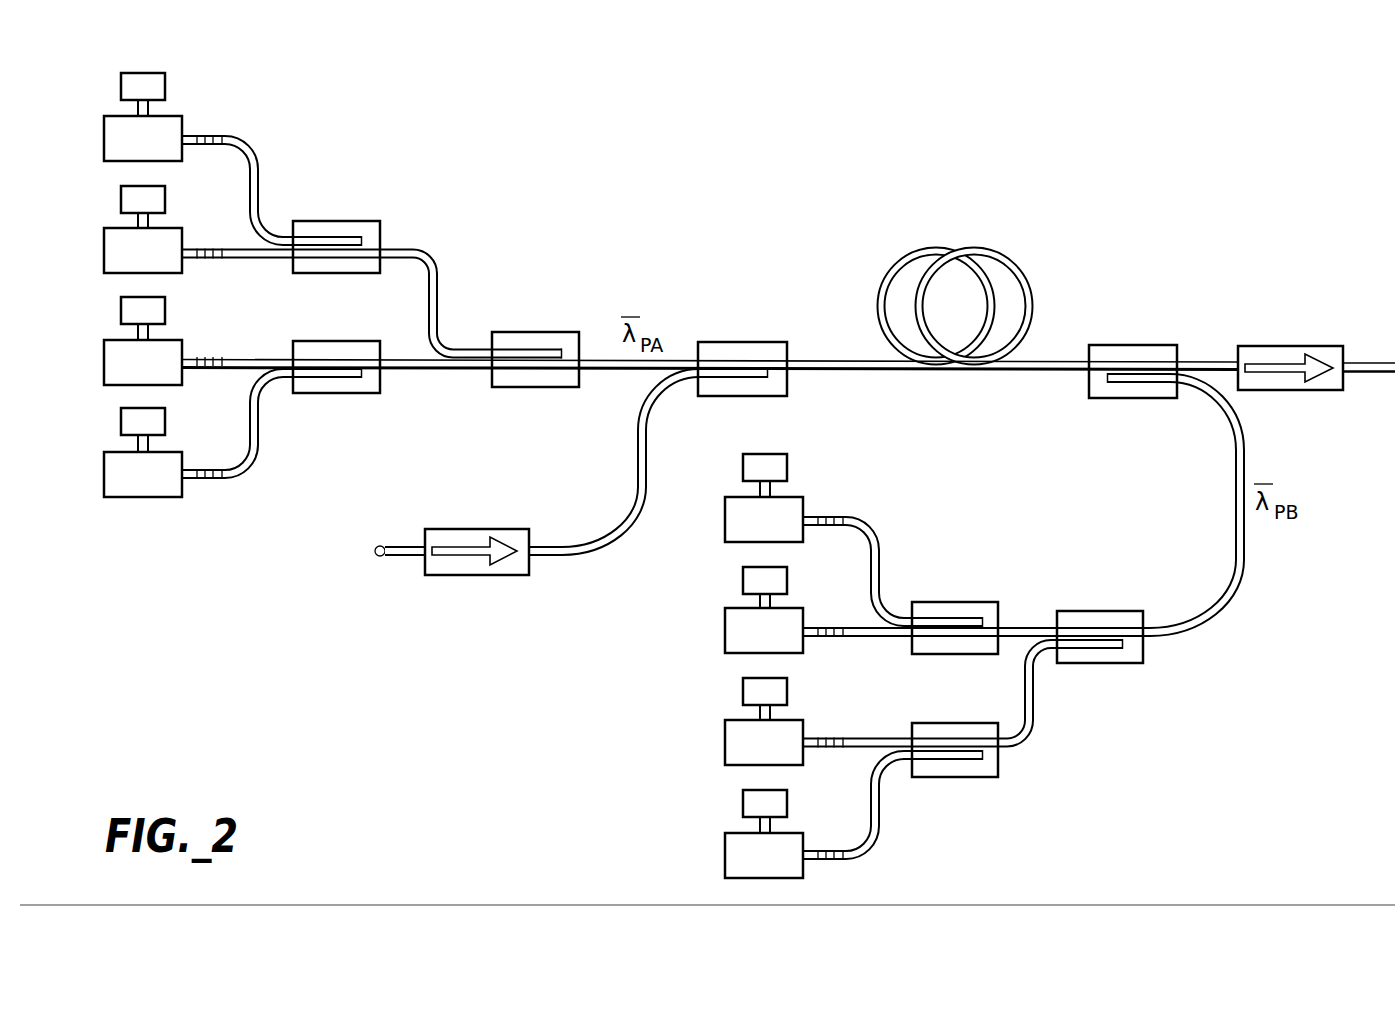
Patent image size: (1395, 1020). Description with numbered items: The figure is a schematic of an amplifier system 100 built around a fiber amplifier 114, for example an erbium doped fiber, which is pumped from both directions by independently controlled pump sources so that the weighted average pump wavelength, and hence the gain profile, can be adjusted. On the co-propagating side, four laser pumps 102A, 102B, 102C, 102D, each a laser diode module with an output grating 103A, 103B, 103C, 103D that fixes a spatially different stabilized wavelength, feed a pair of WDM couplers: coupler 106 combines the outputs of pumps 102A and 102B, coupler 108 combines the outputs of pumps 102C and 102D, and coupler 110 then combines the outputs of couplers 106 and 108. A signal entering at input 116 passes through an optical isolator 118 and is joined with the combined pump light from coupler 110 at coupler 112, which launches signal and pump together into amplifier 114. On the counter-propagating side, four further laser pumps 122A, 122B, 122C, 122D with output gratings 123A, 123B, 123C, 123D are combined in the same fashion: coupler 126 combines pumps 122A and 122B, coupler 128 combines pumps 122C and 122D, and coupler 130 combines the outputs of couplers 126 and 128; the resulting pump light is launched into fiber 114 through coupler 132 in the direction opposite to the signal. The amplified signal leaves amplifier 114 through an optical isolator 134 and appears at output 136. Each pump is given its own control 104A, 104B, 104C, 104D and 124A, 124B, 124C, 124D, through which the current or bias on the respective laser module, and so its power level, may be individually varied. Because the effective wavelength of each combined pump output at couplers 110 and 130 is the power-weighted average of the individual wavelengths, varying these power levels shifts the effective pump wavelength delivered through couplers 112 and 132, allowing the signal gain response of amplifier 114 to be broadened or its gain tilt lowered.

The amplifier system 100 is at (1117, 181).
The laser pump 102A is at (174, 116).
The laser pump 102B is at (173, 228).
The laser pump 102C is at (173, 340).
The laser pump 102D is at (173, 452).
The output grating 103A is at (254, 118).
The output grating 103B is at (220, 262).
The output grating 103C is at (218, 355).
The output grating 103D is at (208, 480).
The control 104A is at (151, 72).
The control 104B is at (121, 197).
The control 104C is at (121, 308).
The control 104D is at (121, 419).
The WDM coupler 106 is at (330, 221).
The WDM coupler 108 is at (330, 393).
The WDM coupler 110 is at (515, 332).
The coupler 112 is at (738, 342).
The fiber amplifier 114 is at (978, 250).
The input 116 is at (380, 545).
The optical isolator 118 is at (472, 529).
The laser pump 122A is at (795, 497).
The laser pump 122B is at (795, 608).
The laser pump 122C is at (795, 720).
The laser pump 122D is at (795, 833).
The output grating 123A is at (840, 514).
The output grating 123B is at (838, 643).
The output grating 123C is at (838, 735).
The output grating 123D is at (828, 860).
The control 124A is at (771, 453).
The control 124B is at (743, 577).
The control 124C is at (743, 689).
The control 124D is at (743, 800).
The WDM coupler 126 is at (950, 602).
The WDM coupler 128 is at (948, 777).
The WDM coupler 130 is at (1128, 611).
The coupler 132 is at (1118, 345).
The optical isolator 134 is at (1262, 346).
The output 136 is at (1394, 335).